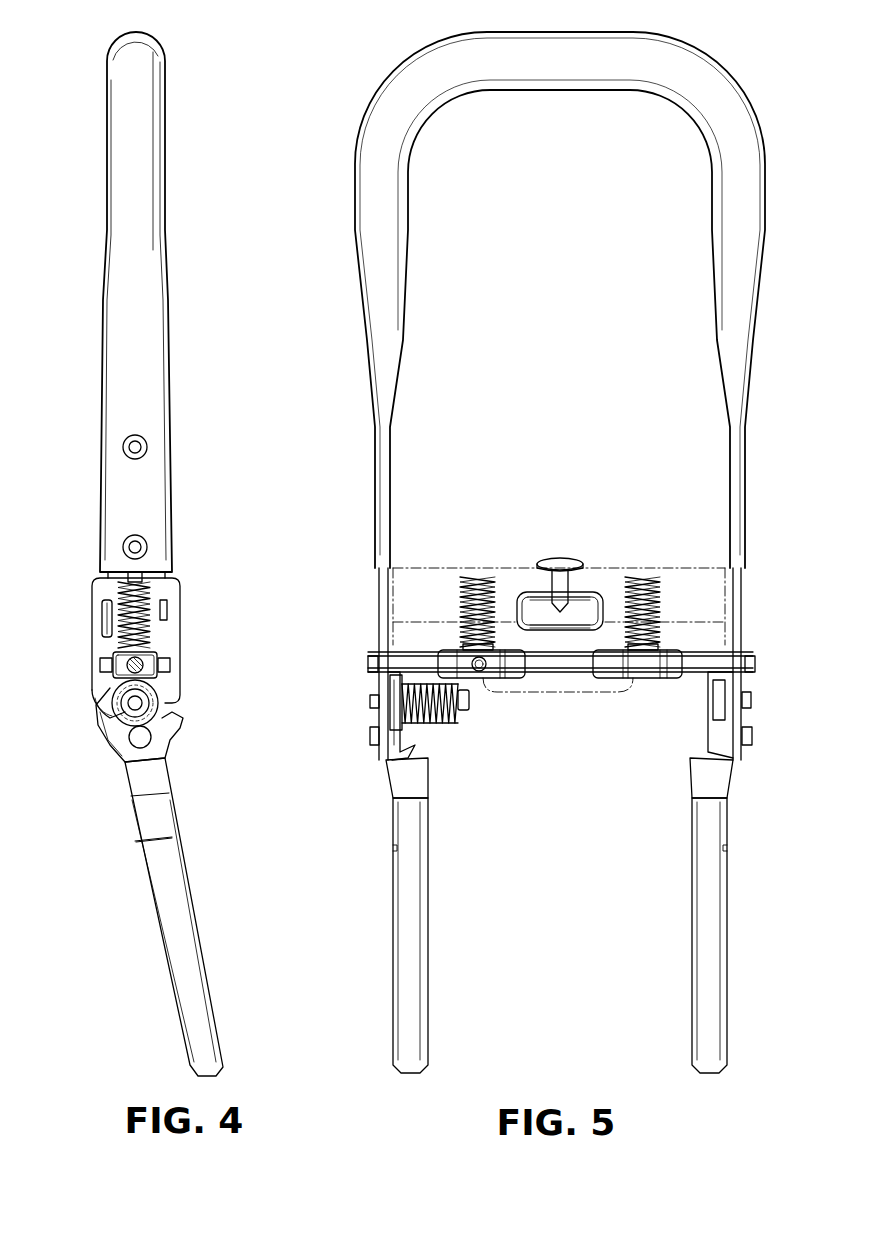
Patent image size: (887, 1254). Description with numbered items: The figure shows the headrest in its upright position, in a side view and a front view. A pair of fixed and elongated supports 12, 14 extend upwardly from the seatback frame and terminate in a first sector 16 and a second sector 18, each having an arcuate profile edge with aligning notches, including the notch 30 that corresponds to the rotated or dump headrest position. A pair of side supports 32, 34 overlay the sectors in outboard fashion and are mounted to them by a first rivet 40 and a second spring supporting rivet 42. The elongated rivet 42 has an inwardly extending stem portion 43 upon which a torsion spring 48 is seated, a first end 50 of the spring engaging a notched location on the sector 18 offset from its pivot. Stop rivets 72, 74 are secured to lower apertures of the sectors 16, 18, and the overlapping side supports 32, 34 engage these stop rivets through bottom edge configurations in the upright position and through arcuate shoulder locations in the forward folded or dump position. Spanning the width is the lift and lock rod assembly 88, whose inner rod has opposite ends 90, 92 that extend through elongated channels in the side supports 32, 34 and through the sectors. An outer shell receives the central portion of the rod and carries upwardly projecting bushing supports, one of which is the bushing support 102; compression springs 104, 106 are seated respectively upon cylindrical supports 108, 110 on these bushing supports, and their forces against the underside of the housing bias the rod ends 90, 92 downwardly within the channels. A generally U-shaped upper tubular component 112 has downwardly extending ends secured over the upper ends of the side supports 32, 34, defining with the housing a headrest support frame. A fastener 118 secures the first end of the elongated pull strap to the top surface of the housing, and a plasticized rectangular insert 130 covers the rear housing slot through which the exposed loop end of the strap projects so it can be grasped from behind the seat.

In FIG. 5, the fixed elongated support 12 is at (393, 940).
In FIG. 4, the fixed elongated support 14 is at (175, 942).
In FIG. 5, the first upper arcuate edge defining sector 16 is at (736, 710).
In FIG. 4, the second upper arcuate edge defining sector 18 is at (172, 728).
In FIG. 5, the second upper arcuate edge defining sector 18 is at (384, 713).
In FIG. 4, the aligning notch 30 is at (165, 707).
In FIG. 5, the side support 32 is at (745, 610).
In FIG. 4, the side support 34 is at (180, 630).
In FIG. 5, the side support 34 is at (378, 607).
In FIG. 5, the first rivet 40 is at (752, 700).
In FIG. 4, the second spring supporting rivet 42 is at (118, 722).
In FIG. 5, the second spring supporting rivet 42 is at (370, 700).
In FIG. 5, the inwardly extending stem portion 43 is at (462, 698).
In FIG. 5, the torsion spring 48 is at (445, 727).
In FIG. 4, the first end 50 is at (115, 697).
In FIG. 5, the first end 50 is at (392, 675).
In FIG. 5, the stop rivet 72 is at (752, 740).
In FIG. 5, the stop rivet 74 is at (378, 745).
In FIG. 4, the lift and lock rod assembly 88 is at (120, 668).
In FIG. 5, the lift and lock rod assembly 88 is at (565, 672).
In FIG. 5, the rod end 90 is at (755, 662).
In FIG. 5, the rod end 92 is at (368, 660).
In FIG. 4, the bushing support 102 is at (152, 665).
In FIG. 5, the compression spring 104 is at (655, 597).
In FIG. 4, the compression spring 106 is at (118, 595).
In FIG. 5, the compression spring 106 is at (465, 597).
In FIG. 5, the cylindrical support 108 is at (662, 643).
In FIG. 4, the cylindrical support 110 is at (108, 638).
In FIG. 5, the cylindrical support 110 is at (458, 643).
In FIG. 4, the upper tubular component 112 is at (107, 238).
In FIG. 5, the upper tubular component 112 is at (356, 228).
In FIG. 4, the fastener 118 is at (150, 580).
In FIG. 5, the fastener 118 is at (560, 562).
In FIG. 5, the rectangular insert 130 is at (590, 600).